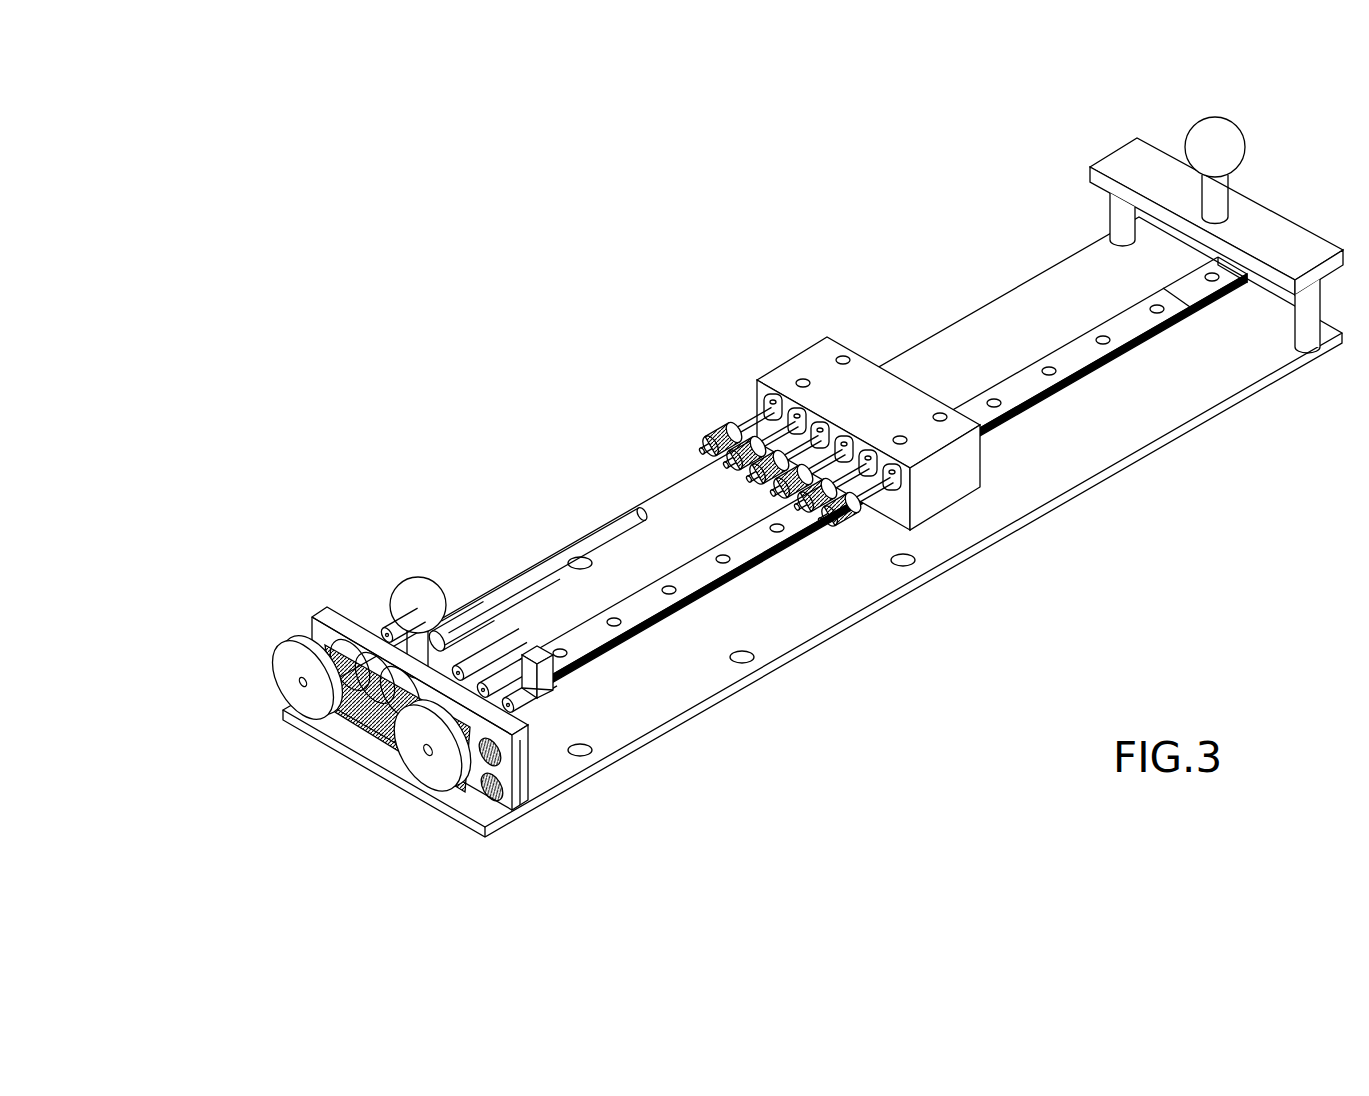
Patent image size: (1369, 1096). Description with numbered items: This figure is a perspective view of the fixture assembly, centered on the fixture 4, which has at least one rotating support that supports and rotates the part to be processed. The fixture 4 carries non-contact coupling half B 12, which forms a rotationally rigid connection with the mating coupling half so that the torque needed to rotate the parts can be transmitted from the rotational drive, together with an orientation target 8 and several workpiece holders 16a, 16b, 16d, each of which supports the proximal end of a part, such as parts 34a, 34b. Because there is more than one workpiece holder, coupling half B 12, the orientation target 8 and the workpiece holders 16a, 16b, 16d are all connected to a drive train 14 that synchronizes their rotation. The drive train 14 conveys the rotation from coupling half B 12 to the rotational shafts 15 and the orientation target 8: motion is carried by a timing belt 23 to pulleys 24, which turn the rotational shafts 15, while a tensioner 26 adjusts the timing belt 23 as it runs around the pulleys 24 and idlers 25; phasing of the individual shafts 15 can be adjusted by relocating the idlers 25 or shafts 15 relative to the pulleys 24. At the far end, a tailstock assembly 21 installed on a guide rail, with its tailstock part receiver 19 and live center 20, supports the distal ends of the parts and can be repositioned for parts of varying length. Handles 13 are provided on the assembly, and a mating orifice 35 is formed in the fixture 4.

The fixture 4 is at (813, 650).
The orientation target 8 is at (417, 780).
The non-contact coupling half B 12 is at (273, 675).
The handles 13 is at (1205, 118).
The drive train 14 is at (322, 605).
The rotational shafts 15 is at (373, 623).
The workpiece holder 16a is at (387, 603).
The workpiece holder 16b is at (552, 660).
The workpiece holder 16d is at (552, 687).
The tailstock part receiver 19 is at (707, 430).
The live center 20 is at (755, 413).
The tailstock assembly 21 is at (797, 352).
The timing belt 23 is at (307, 635).
The pulleys 24 is at (337, 690).
The idlers 25 is at (380, 728).
The tensioner 26 is at (532, 763).
The part 34a is at (623, 510).
The part 34b is at (493, 643).
The mating orifice 35 is at (595, 752).